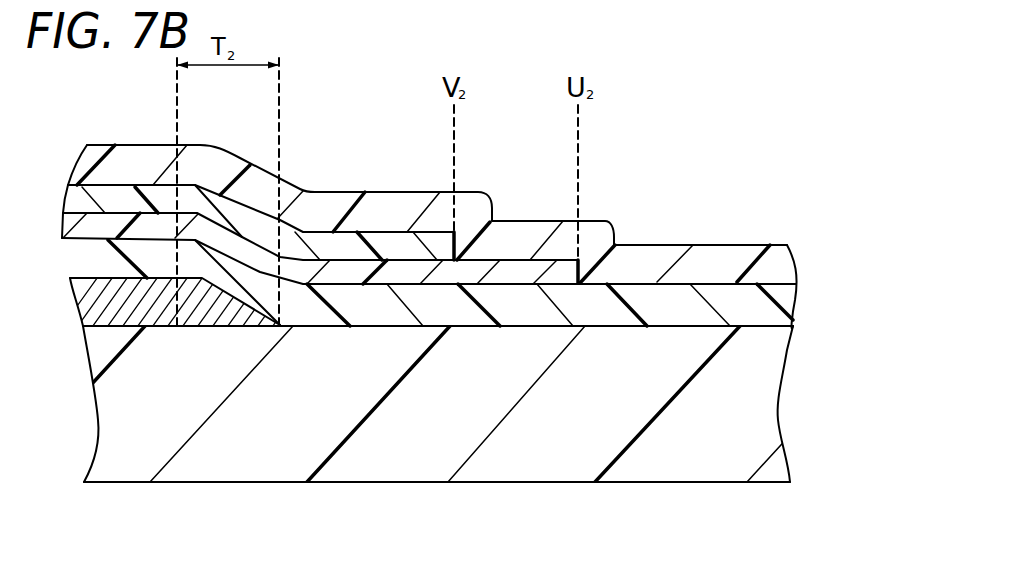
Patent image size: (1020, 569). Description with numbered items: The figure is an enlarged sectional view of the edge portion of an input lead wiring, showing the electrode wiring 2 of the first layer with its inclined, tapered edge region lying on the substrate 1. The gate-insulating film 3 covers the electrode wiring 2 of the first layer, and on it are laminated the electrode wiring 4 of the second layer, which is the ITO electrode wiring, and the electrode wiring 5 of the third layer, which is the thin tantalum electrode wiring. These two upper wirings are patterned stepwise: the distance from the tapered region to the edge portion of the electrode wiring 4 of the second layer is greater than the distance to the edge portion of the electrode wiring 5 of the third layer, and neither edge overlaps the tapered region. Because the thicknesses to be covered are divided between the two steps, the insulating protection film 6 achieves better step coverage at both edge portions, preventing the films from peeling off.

The substrate 1 is at (728, 447).
The electrode wiring of the first layer 2 is at (146, 312).
The gate-insulating film 3 is at (573, 308).
The electrode wiring of the second layer 4 is at (392, 272).
The electrode wiring of the third layer 5 is at (127, 203).
The insulating protection film 6 is at (690, 258).